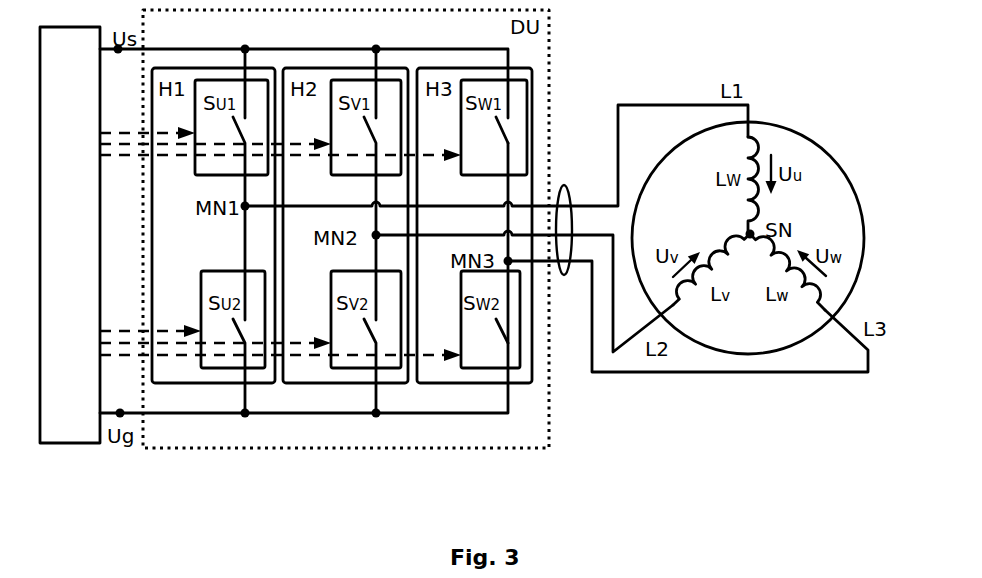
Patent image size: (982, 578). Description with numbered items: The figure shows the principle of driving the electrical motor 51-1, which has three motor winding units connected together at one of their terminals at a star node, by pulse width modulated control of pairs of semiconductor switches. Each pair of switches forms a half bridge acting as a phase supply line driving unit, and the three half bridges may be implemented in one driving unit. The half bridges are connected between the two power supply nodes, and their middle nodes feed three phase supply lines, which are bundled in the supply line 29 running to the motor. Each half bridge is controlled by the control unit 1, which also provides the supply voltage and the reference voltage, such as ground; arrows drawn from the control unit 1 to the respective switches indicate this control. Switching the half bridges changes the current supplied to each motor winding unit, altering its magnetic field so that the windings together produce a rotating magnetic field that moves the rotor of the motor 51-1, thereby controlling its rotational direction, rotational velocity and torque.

The control unit 1 is at (70, 235).
The supply line 29 is at (565, 218).
The electrical motor 51-1 is at (749, 238).